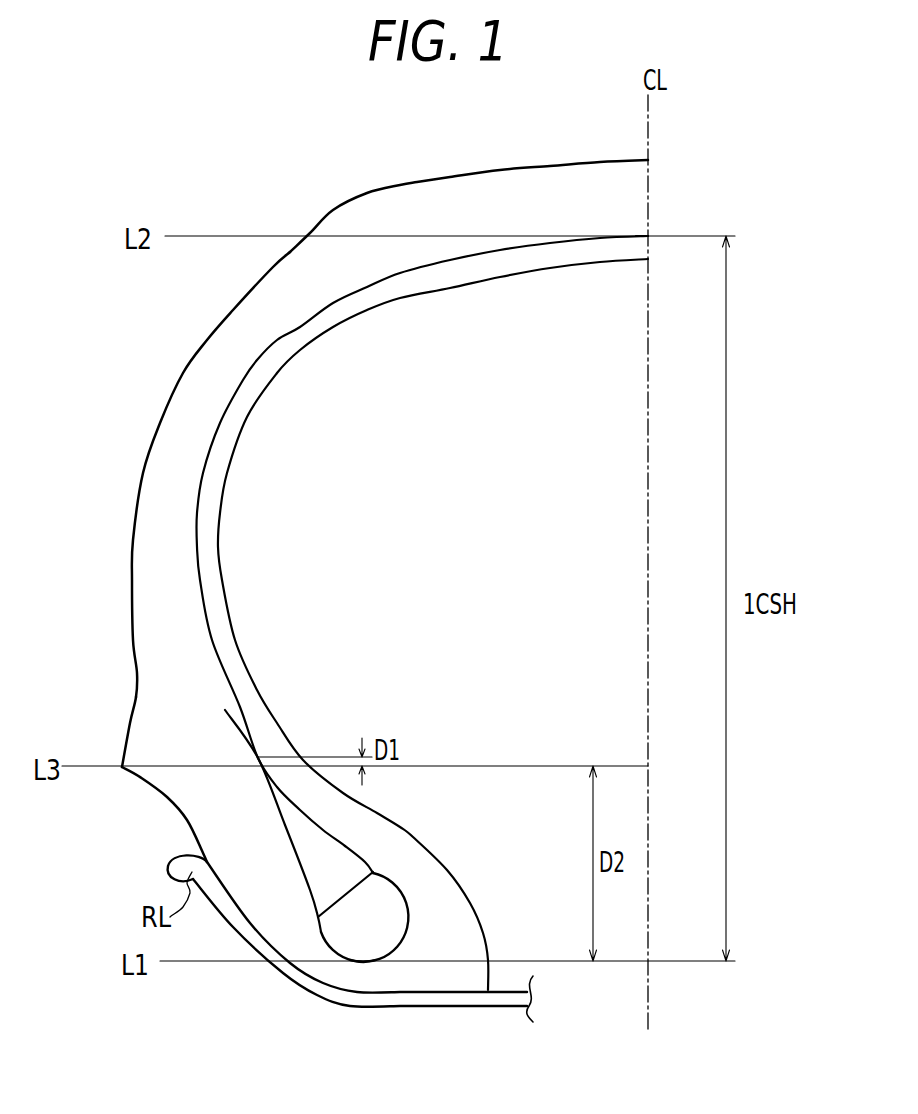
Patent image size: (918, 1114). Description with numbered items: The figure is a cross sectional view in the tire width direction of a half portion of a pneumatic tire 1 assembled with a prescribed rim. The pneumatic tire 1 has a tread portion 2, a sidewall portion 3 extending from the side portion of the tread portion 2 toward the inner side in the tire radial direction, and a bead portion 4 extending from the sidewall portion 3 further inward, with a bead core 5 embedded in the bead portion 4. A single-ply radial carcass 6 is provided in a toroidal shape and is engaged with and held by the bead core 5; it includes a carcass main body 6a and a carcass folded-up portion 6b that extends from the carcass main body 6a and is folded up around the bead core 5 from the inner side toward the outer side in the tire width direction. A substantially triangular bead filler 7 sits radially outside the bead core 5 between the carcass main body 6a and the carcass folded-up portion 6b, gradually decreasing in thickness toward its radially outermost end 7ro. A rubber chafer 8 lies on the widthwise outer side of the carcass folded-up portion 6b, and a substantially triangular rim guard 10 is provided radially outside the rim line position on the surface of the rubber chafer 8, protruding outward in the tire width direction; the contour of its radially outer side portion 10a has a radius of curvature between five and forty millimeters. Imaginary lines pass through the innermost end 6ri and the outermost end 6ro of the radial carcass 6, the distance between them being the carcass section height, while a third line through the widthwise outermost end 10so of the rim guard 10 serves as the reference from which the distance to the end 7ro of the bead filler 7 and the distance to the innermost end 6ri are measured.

The pneumatic tire 1 is at (315, 178).
The tread portion 2 is at (524, 161).
The sidewall portion 3 is at (150, 415).
The bead portion 4 is at (465, 862).
The bead core 5 is at (380, 915).
The radial carcass 6 is at (200, 483).
The carcass main body 6a is at (360, 855).
The carcass folded-up portion 6b is at (300, 865).
The outermost end of the radial carcass in the tire radial direction 6ro is at (648, 236).
The innermost end of the radial carcass in the tire radial direction 6ri is at (358, 963).
The bead filler 7 is at (310, 837).
The outermost end of the bead filler in the tire radial direction 7ro is at (262, 760).
The rubber chafer 8 is at (213, 803).
The rim guard 10 is at (158, 782).
The radially outer side portion of the rim guard 10a is at (130, 705).
The outermost end of the rim guard in the tire width direction 10so is at (121, 768).